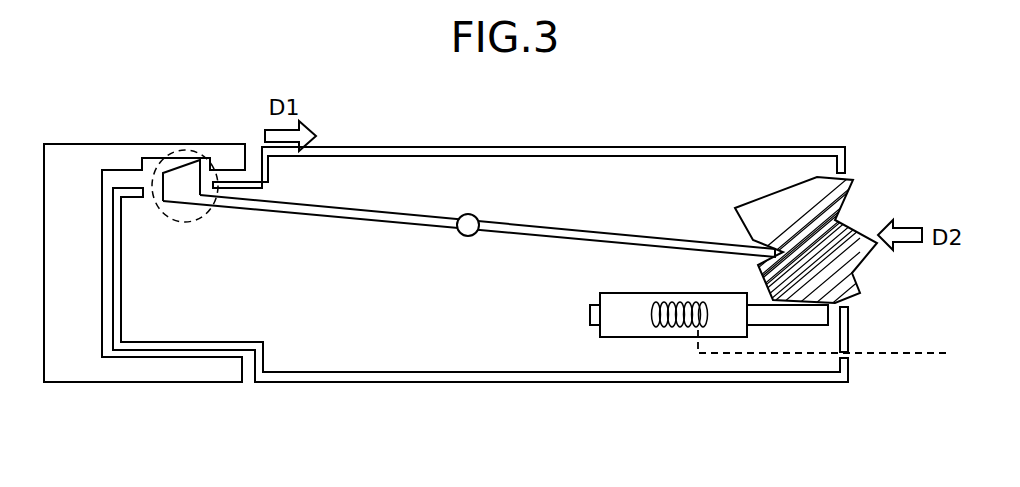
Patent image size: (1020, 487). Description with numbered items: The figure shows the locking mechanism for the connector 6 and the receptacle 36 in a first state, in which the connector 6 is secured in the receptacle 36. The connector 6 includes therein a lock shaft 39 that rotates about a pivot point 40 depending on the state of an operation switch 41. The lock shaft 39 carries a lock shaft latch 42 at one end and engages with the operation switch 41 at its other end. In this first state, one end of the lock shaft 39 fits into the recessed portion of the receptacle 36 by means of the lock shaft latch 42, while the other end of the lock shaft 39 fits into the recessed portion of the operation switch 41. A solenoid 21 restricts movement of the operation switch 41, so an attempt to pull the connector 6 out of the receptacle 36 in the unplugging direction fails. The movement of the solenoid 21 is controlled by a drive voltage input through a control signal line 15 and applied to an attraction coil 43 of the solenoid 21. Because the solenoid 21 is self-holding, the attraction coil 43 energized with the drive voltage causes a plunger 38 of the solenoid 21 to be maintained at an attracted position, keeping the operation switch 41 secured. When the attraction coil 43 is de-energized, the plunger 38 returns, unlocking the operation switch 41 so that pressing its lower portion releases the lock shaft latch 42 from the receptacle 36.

The receptacle 36 is at (102, 382).
The connector 6 is at (328, 382).
The lock shaft latch 42 is at (178, 166).
The lock shaft 39 is at (365, 211).
The pivot point 40 is at (466, 214).
The operation switch 41 is at (772, 193).
The solenoid 21 is at (622, 337).
The attraction coil 43 is at (680, 328).
The plunger 38 is at (757, 325).
The control signal line 15 is at (877, 353).